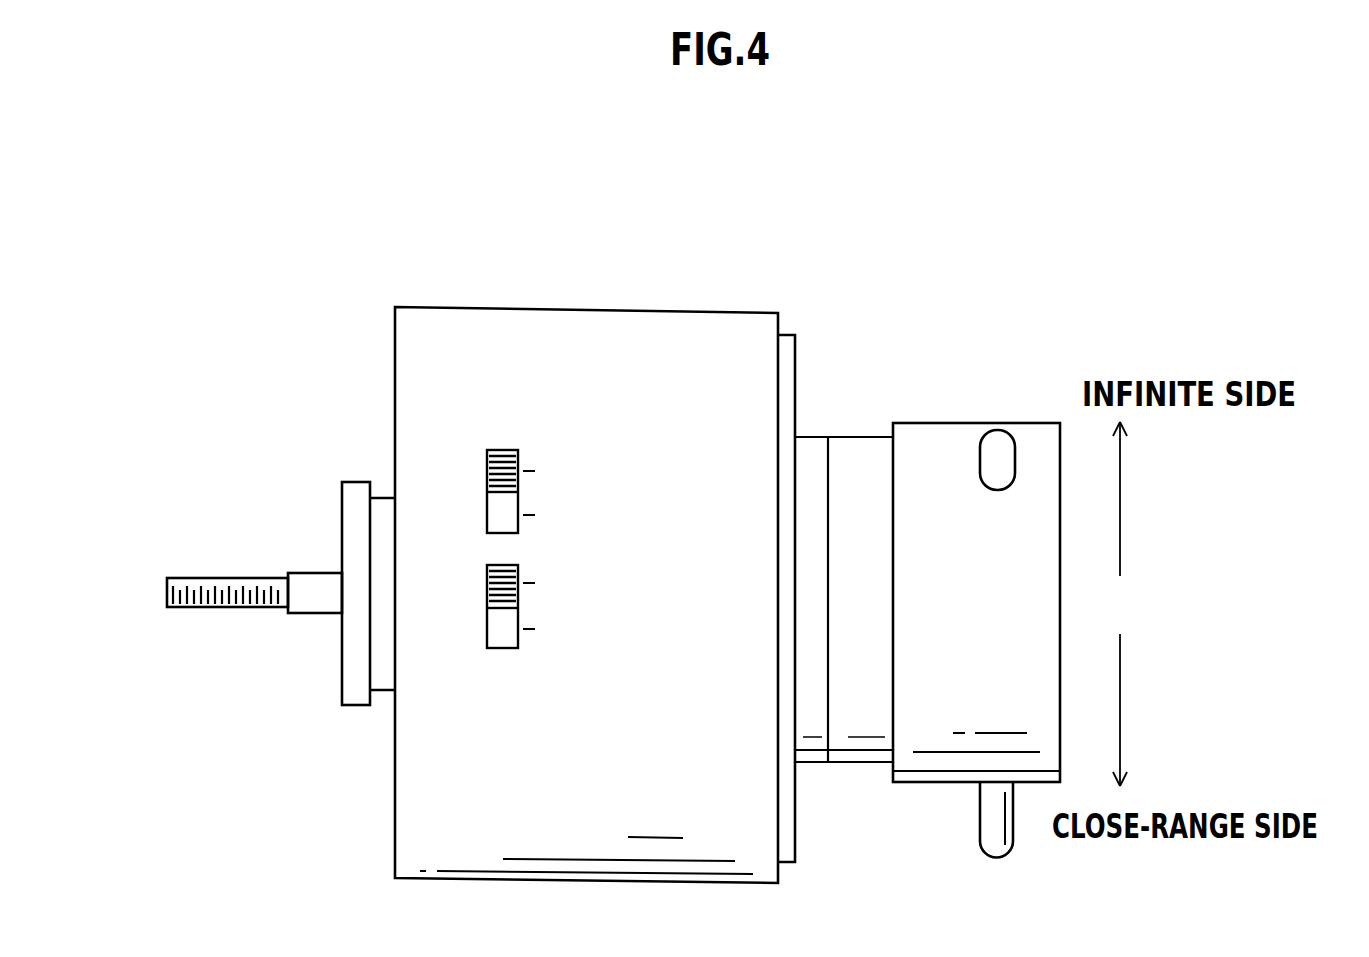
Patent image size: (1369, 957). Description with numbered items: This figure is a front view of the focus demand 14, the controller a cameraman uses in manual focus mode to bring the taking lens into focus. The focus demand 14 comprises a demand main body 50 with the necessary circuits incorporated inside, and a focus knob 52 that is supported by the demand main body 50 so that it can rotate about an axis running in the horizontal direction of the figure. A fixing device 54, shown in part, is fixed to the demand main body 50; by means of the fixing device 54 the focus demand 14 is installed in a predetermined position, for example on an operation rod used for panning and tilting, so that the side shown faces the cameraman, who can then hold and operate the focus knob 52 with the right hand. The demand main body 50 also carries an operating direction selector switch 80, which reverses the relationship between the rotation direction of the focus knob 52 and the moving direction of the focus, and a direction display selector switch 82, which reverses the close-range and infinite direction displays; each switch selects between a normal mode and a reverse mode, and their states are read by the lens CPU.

The focus demand 14 is at (868, 278).
The demand main body 50 is at (590, 307).
The focus knob 52 is at (940, 430).
The fixing device 54 is at (312, 470).
The operating direction selector switch 80 is at (511, 437).
The direction display selector switch 82 is at (507, 662).